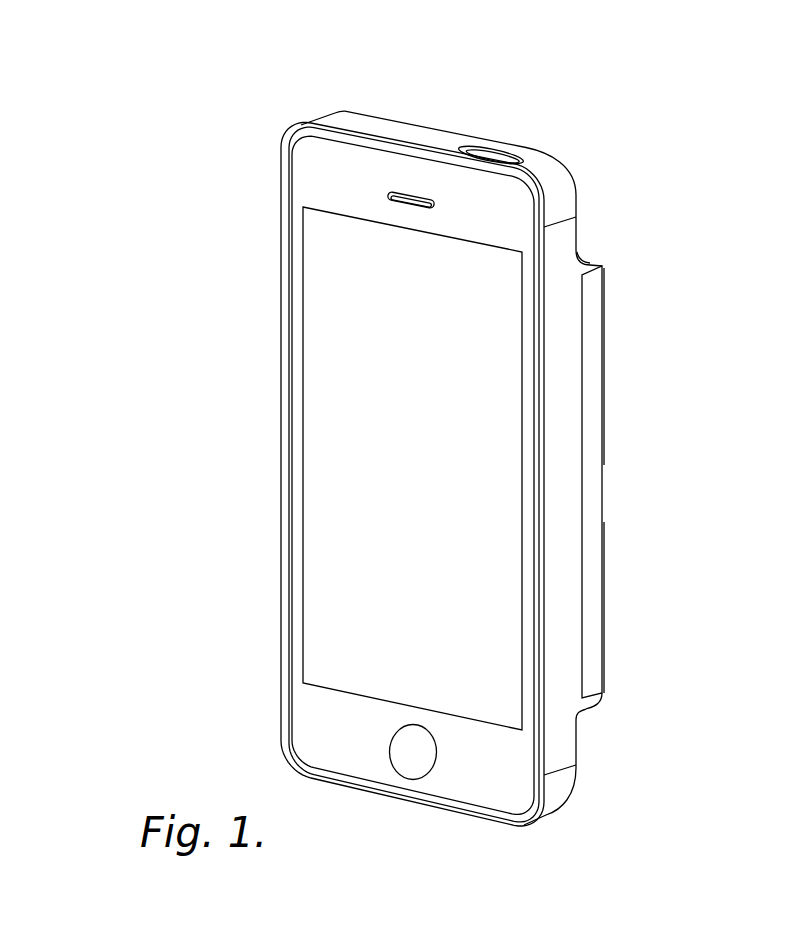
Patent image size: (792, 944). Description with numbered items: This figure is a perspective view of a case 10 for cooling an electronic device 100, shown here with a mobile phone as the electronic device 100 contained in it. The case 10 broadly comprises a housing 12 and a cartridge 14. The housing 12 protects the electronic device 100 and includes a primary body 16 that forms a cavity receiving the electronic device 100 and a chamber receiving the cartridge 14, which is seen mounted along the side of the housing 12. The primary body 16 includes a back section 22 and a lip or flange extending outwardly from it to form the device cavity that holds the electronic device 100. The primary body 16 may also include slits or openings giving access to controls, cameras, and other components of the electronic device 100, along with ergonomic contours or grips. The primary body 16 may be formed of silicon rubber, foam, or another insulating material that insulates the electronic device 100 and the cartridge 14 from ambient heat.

The case 10 is at (623, 80).
The housing 12 is at (450, 117).
The cartridge 14 is at (587, 456).
The primary body 16 is at (571, 187).
The back section 22 is at (598, 578).
The electronic device 100 is at (337, 423).